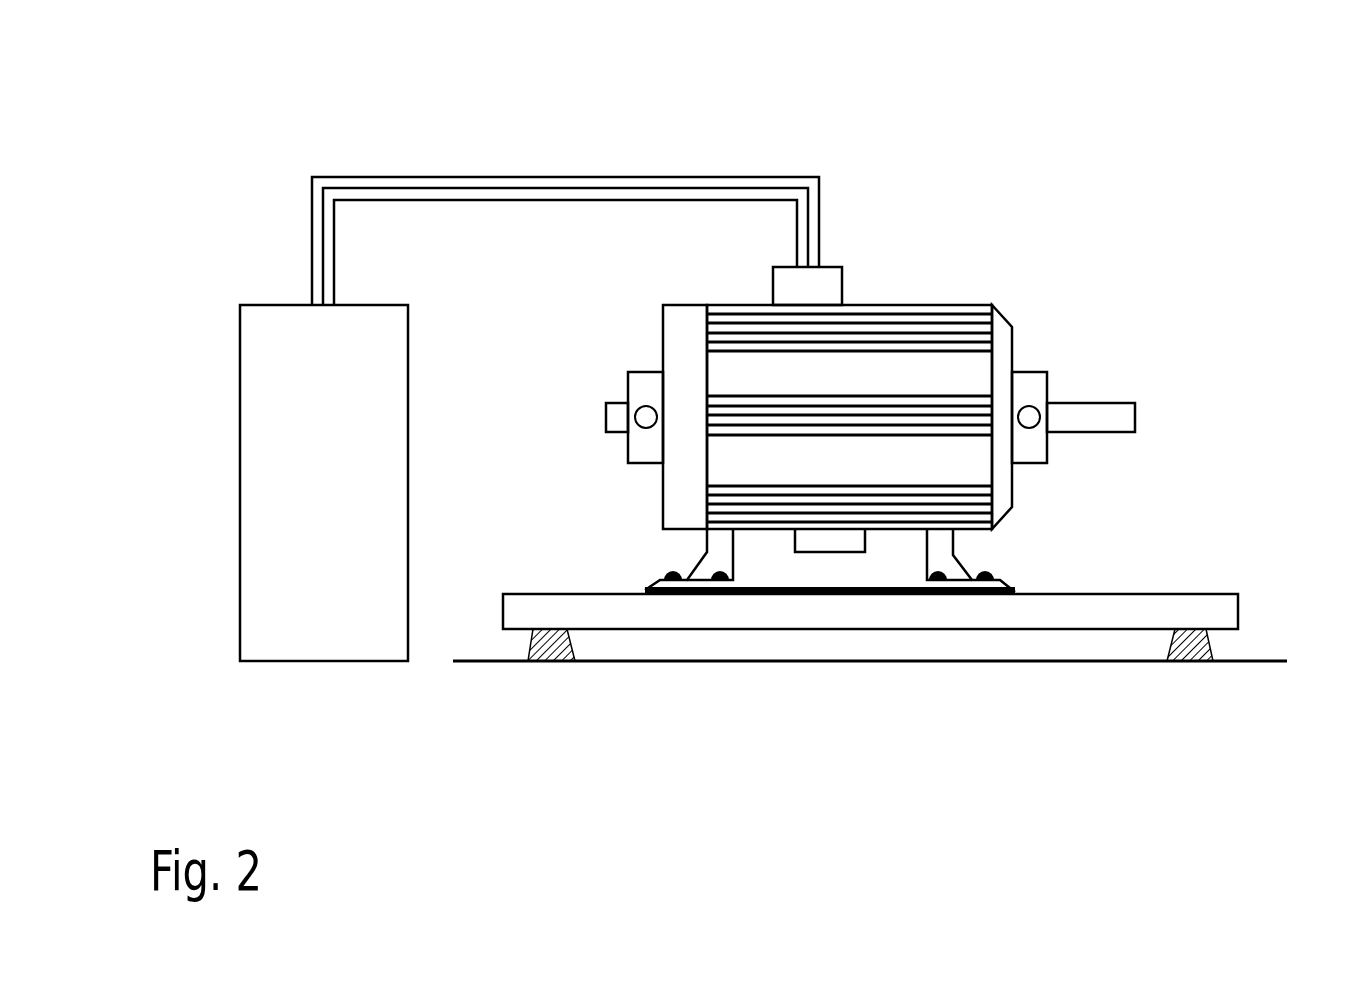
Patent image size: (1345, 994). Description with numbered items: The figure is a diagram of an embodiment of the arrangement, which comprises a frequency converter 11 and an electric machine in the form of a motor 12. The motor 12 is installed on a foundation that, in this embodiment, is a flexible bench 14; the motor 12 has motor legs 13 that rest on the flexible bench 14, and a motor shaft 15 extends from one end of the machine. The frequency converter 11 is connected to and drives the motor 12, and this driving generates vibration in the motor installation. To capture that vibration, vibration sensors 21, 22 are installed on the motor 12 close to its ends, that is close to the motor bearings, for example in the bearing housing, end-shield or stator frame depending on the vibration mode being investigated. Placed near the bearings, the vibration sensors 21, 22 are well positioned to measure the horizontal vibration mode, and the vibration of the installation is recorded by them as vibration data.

The frequency converter 11 is at (262, 335).
The motor 12 is at (958, 383).
The motor legs 13 is at (782, 563).
The flexible bench 14 is at (1098, 608).
The motor shaft 15 is at (1090, 417).
The vibration sensor 21 is at (646, 417).
The vibration sensor 22 is at (1029, 417).